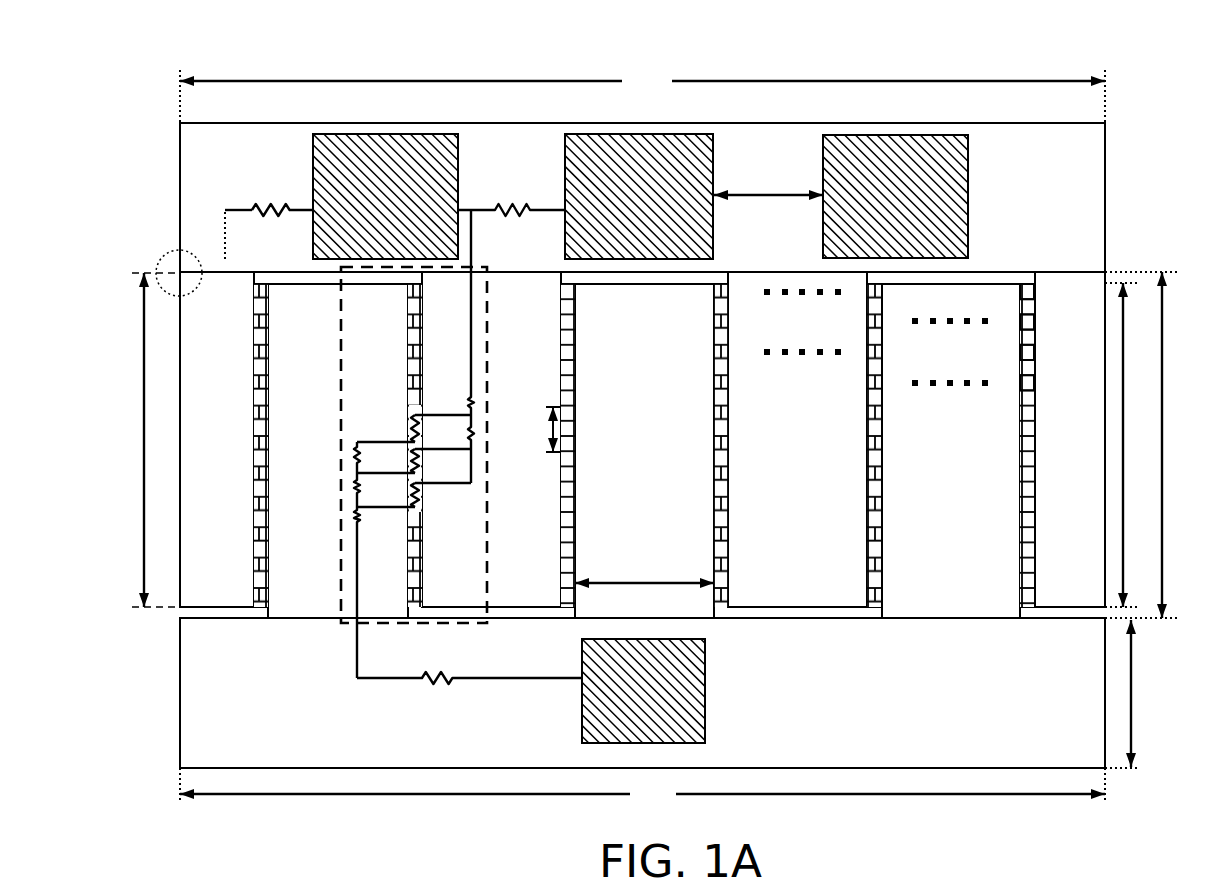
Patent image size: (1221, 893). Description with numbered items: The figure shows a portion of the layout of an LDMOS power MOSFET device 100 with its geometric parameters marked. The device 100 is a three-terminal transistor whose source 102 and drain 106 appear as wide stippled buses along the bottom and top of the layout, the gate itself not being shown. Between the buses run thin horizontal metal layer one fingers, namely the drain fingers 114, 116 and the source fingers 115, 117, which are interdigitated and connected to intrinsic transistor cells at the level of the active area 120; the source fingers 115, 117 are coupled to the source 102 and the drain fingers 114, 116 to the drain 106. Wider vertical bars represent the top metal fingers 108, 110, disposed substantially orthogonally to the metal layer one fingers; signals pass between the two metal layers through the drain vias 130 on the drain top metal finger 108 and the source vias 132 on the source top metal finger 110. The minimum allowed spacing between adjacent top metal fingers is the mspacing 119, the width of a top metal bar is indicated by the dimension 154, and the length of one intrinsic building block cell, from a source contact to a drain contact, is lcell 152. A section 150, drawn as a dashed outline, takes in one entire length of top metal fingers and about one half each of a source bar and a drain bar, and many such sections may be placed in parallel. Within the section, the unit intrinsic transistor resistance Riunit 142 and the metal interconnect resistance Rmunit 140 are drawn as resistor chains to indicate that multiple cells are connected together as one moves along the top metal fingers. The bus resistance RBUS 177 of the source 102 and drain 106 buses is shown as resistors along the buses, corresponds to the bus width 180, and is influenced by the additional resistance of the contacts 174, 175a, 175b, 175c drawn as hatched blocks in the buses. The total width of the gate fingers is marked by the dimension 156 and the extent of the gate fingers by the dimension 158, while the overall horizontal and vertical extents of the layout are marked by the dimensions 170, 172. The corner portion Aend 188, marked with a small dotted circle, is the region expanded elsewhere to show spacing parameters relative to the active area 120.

The MOSFET device 100 is at (1148, 124).
The source 102 is at (949, 708).
The drain 106 is at (1023, 203).
The TM finger 108 is at (782, 515).
The TM finger 110 is at (937, 515).
The drain finger 114 is at (1030, 292).
The source finger 115 is at (1030, 321).
The drain finger 116 is at (1030, 351).
The source finger 117 is at (1030, 382).
The mspacing 119 is at (693, 428).
The active area 120 is at (1123, 467).
The drain TM/M1 vias 130 is at (785, 298).
The source TM/M1 vias 132 is at (933, 326).
The metal interconnect resistance parameter Rmunit 140 is at (357, 450).
The unit intrinsic transistor resistance parameter Riunit 142 is at (412, 425).
The section 150 is at (341, 330).
The lcell 152 is at (550, 432).
The active region width 154 is at (630, 583).
The gate bus width 156 is at (548, 82).
The gate height 158 is at (147, 357).
The device width 170 is at (373, 796).
The device height 172 is at (1164, 390).
The contact 174 is at (631, 696).
The contact 175a is at (367, 206).
The contact 175b is at (620, 202).
The contact 175c is at (877, 202).
The RBUS 177 is at (284, 208).
The WBUS 180 is at (1131, 718).
The portion Aend 188 is at (163, 256).